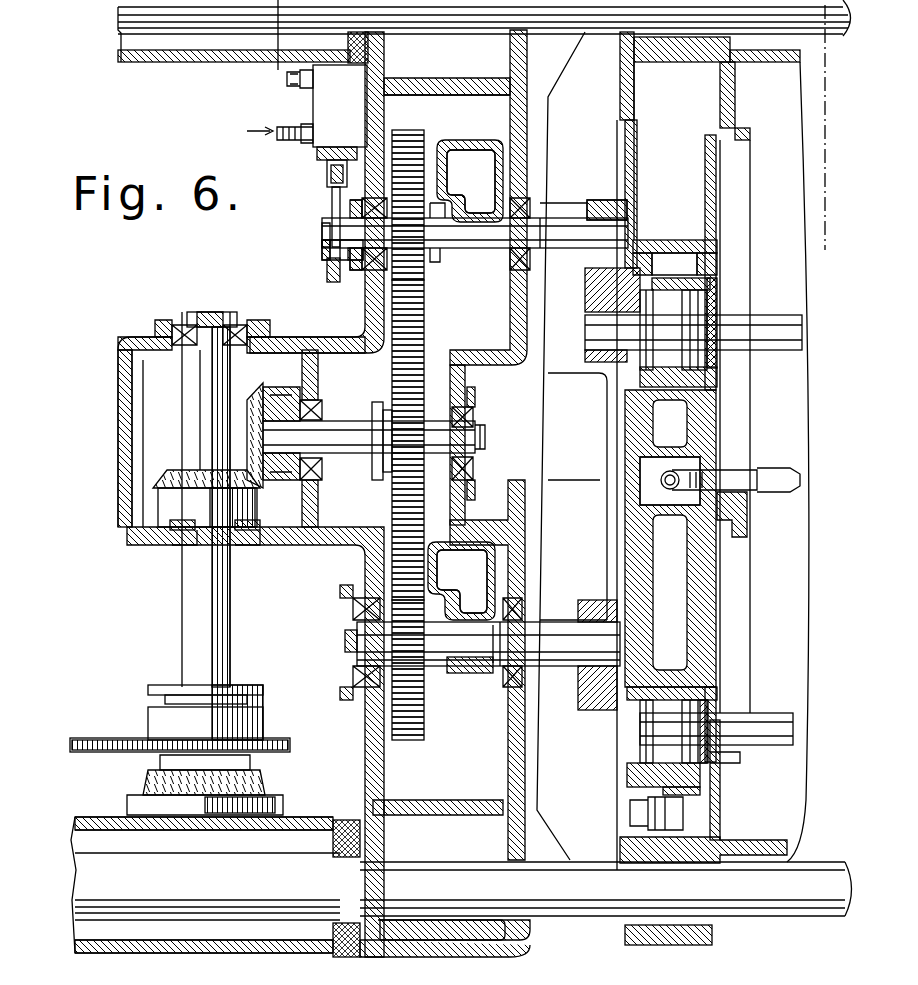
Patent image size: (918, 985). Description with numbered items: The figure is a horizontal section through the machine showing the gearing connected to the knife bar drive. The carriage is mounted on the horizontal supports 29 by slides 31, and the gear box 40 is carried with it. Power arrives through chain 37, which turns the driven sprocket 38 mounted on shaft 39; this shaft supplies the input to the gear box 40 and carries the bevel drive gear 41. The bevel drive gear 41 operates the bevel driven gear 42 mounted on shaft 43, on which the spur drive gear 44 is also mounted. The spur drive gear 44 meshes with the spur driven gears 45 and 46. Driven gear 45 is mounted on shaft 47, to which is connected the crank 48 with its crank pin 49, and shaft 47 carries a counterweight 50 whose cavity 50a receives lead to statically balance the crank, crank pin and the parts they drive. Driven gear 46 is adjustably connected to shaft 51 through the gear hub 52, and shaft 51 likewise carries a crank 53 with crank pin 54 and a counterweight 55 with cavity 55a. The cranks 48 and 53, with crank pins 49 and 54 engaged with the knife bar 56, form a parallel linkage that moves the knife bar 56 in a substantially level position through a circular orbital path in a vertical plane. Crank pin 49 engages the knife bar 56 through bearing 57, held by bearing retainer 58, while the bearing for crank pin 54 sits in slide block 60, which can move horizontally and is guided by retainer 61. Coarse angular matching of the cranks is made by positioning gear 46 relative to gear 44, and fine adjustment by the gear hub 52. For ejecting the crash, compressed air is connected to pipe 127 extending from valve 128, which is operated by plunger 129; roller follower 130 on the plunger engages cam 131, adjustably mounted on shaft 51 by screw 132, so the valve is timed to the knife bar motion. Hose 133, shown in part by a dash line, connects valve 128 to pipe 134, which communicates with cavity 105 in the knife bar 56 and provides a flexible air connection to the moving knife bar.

The horizontal supports 29 is at (484, 12).
The slides 31 is at (668, 942).
The chain 37 is at (95, 740).
The driven sprocket 38 is at (272, 738).
The shaft 39 is at (195, 617).
The gear box 40 is at (358, 758).
The bevel drive gear 41 is at (168, 470).
The bevel driven gear 42 is at (256, 392).
The shaft 43 is at (343, 430).
The spur drive gear 44 is at (390, 496).
The spur driven gear 45 is at (424, 737).
The spur driven gear 46 is at (428, 296).
The shaft 47 is at (556, 628).
The crank 48 is at (590, 698).
The crank pin 49 is at (770, 722).
The counterweight 50 is at (477, 673).
The cavity 50a is at (479, 581).
The shaft 51 is at (560, 225).
The gear hub 52 is at (440, 232).
The crank 53 is at (600, 292).
The crank pin 54 is at (756, 316).
The counterweight 55 is at (478, 140).
The cavity 55a is at (486, 181).
The knife bar 56 is at (640, 530).
The bearing 57 is at (657, 700).
The bearing retainer 58 is at (695, 708).
The slide block 60 is at (645, 252).
The retainer 61 is at (712, 282).
The cavity 105 is at (660, 492).
The pipe 127 is at (290, 140).
The valve 128 is at (355, 112).
The plunger 129 is at (320, 168).
The roller follower 130 is at (328, 192).
The cam 131 is at (327, 276).
The screw 132 is at (322, 243).
The hose 133 is at (278, 68).
The pipe 134 is at (752, 496).